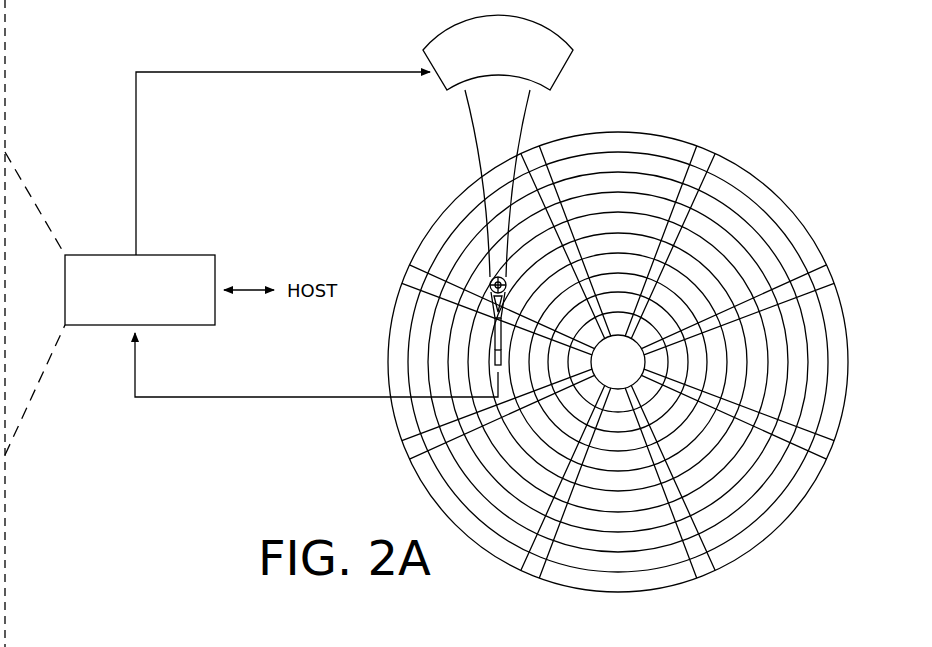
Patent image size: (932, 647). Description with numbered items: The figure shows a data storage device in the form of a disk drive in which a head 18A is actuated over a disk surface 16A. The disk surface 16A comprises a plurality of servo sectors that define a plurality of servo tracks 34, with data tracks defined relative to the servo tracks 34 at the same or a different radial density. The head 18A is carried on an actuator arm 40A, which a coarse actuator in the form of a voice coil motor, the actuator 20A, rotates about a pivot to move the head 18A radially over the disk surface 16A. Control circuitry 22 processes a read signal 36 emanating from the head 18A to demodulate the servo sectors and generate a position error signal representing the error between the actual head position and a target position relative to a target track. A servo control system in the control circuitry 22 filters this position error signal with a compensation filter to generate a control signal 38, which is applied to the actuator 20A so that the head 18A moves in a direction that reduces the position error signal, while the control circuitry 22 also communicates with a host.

The disk surface 16A is at (778, 183).
The head 18A is at (488, 367).
The actuator 20A is at (437, 80).
The control circuitry 22 is at (185, 255).
The servo tracks 34 is at (610, 157).
The read signal 36 is at (270, 397).
The control signal 38 is at (136, 155).
The actuator arm 40A is at (480, 160).